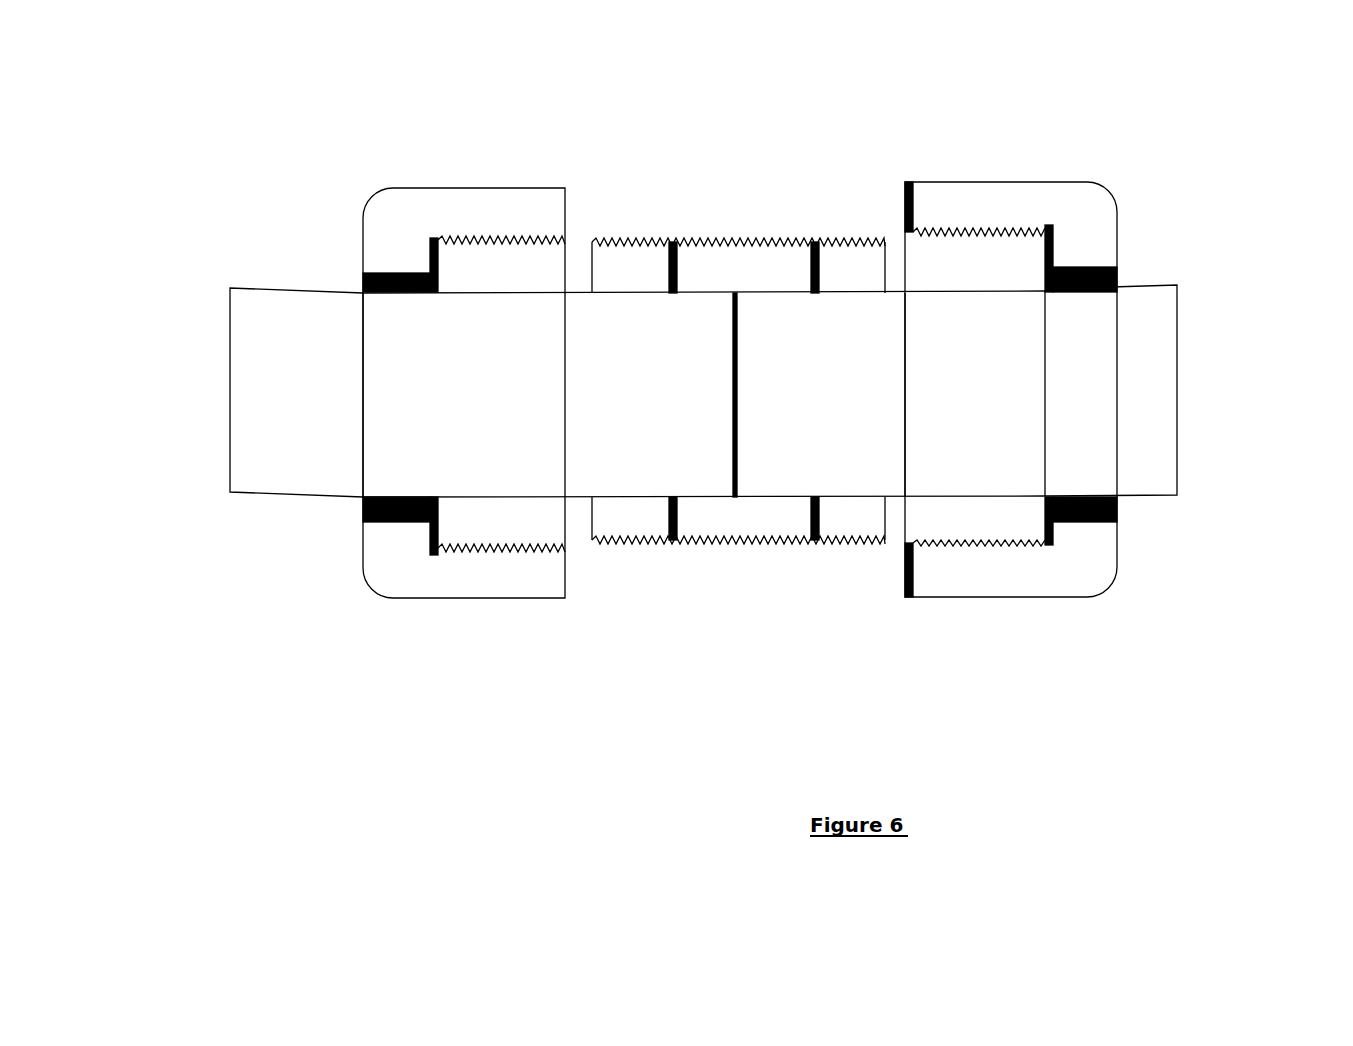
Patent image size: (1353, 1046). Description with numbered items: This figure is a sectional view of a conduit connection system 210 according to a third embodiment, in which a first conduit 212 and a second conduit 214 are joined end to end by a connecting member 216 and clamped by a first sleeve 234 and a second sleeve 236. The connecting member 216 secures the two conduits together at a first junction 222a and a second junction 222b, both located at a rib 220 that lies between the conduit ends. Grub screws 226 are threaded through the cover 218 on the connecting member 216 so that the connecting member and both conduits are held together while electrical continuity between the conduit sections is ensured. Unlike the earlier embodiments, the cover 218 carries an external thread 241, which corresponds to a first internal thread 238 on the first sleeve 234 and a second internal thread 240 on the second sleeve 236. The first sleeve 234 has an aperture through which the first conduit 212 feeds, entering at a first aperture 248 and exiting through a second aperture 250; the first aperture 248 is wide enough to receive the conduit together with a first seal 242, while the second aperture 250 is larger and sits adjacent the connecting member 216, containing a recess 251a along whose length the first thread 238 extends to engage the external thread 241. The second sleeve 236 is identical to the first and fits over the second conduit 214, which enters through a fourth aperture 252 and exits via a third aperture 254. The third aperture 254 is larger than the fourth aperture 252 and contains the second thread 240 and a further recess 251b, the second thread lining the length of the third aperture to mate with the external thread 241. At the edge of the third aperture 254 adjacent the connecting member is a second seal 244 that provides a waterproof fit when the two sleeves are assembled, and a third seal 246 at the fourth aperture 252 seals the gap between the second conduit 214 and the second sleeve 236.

The conduit connection system 210 is at (333, 687).
The first conduit 212 is at (363, 320).
The second conduit 214 is at (990, 332).
The connecting member 216 is at (742, 217).
The cover 218 is at (723, 520).
The rib 220 is at (705, 347).
The first junction 222a is at (725, 408).
The second junction 222b is at (740, 428).
The grub screws 226 is at (670, 540).
The first sleeve 234 is at (438, 208).
The second sleeve 236 is at (1097, 233).
The first thread 238 is at (497, 235).
The second thread 240 is at (998, 224).
The external thread 241 is at (690, 245).
The first seal 242 is at (425, 265).
The second seal 244 is at (925, 196).
The third seal 246 is at (1117, 263).
The first aperture 248 is at (363, 423).
The second aperture 250 is at (565, 385).
The recess 251a is at (487, 530).
The further recess 251b is at (1015, 517).
The fourth aperture 252 is at (1043, 368).
The third aperture 254 is at (907, 372).